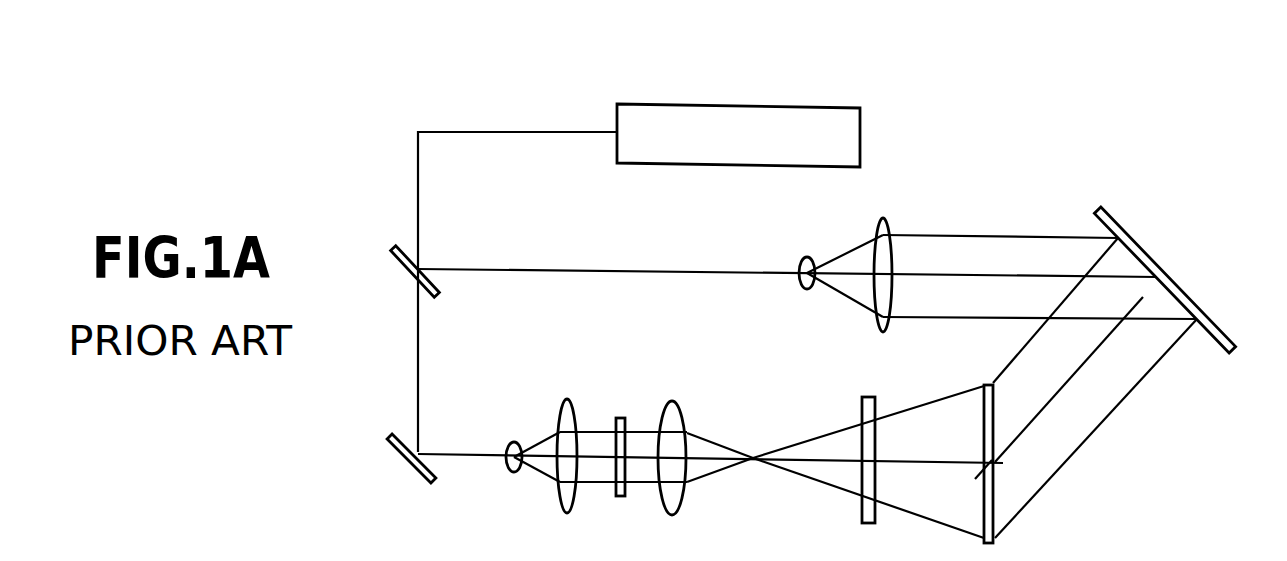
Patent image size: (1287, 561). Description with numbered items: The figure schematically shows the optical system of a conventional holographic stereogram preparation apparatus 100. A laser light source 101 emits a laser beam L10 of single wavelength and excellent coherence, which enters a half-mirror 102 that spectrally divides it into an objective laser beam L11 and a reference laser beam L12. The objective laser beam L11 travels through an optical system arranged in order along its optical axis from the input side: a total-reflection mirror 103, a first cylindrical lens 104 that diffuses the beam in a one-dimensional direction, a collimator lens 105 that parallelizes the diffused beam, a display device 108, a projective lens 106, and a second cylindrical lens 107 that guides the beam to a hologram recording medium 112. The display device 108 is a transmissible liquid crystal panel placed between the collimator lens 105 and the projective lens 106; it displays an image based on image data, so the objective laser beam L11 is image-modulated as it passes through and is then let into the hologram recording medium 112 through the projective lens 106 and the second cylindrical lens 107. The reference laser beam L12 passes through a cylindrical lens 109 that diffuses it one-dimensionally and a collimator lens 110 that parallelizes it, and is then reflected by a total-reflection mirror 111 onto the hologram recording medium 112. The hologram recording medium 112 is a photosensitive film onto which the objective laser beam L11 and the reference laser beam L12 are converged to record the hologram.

The holographic stereogram preparation apparatus 100 is at (1006, 195).
The laser light source 101 is at (753, 103).
The half-mirror 102 is at (400, 273).
The total-reflection mirror 103 is at (393, 456).
The first cylindrical lens 104 is at (515, 442).
The collimator lens 105 is at (567, 398).
The projective lens 106 is at (670, 402).
The second cylindrical lens 107 is at (870, 396).
The display device 108 is at (620, 417).
The cylindrical lens 109 is at (807, 289).
The collimator lens 110 is at (885, 218).
The total-reflection mirror 111 is at (1133, 238).
The hologram recording medium 112 is at (983, 427).
The laser beam L10 is at (598, 128).
The objective laser beam L11 is at (450, 450).
The reference laser beam L12 is at (488, 268).